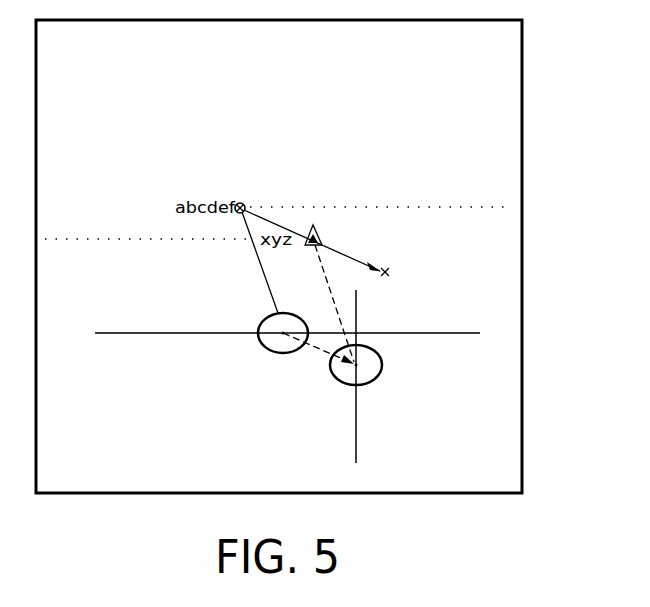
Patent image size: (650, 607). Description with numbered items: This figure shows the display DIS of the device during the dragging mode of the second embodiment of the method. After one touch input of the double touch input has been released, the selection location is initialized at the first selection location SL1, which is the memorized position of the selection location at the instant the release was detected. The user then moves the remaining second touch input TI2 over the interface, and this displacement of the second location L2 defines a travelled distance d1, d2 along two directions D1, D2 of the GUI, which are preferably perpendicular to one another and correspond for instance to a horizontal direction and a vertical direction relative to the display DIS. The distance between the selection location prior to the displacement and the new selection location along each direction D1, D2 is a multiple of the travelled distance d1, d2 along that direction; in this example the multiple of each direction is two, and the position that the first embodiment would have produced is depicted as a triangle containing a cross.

The display DIS is at (458, 129).
The first selection location SL1 is at (252, 203).
The second touch input TI2 is at (272, 318).
The second location L2 is at (284, 335).
The travelled distance along first direction d1 is at (328, 332).
The travelled distance along second direction d2 is at (358, 362).
The first direction D1 is at (287, 321).
The second direction D2 is at (375, 376).